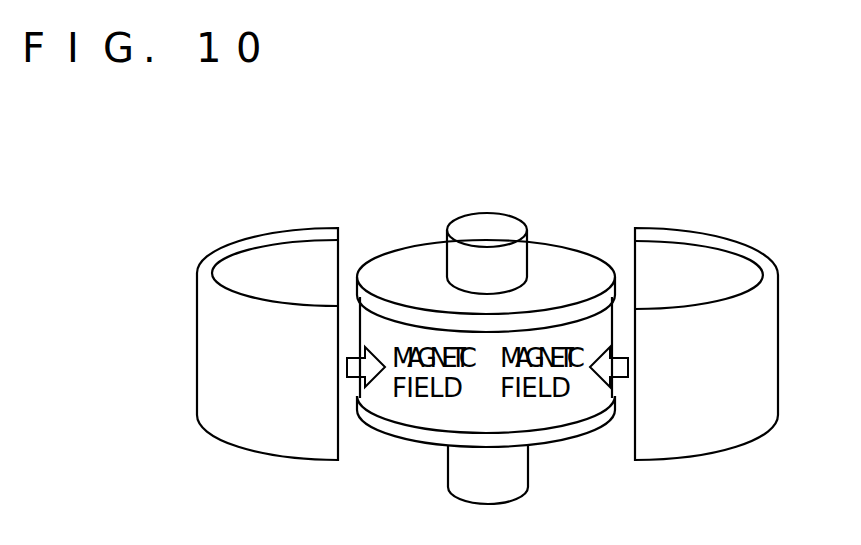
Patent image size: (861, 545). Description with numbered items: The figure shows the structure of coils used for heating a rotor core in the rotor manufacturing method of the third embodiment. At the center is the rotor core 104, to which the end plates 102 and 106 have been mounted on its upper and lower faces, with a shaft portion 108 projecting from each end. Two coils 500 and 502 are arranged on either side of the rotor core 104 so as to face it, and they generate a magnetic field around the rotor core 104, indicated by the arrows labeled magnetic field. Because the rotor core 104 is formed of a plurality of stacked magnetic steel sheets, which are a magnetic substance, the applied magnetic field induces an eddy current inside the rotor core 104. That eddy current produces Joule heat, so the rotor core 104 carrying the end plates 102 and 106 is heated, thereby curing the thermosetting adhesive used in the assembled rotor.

The end plate 102 is at (565, 267).
The rotor core 104 is at (420, 406).
The end plate 106 is at (560, 433).
The shaft 108 is at (492, 227).
The coil 500 is at (766, 245).
The coil 502 is at (233, 248).